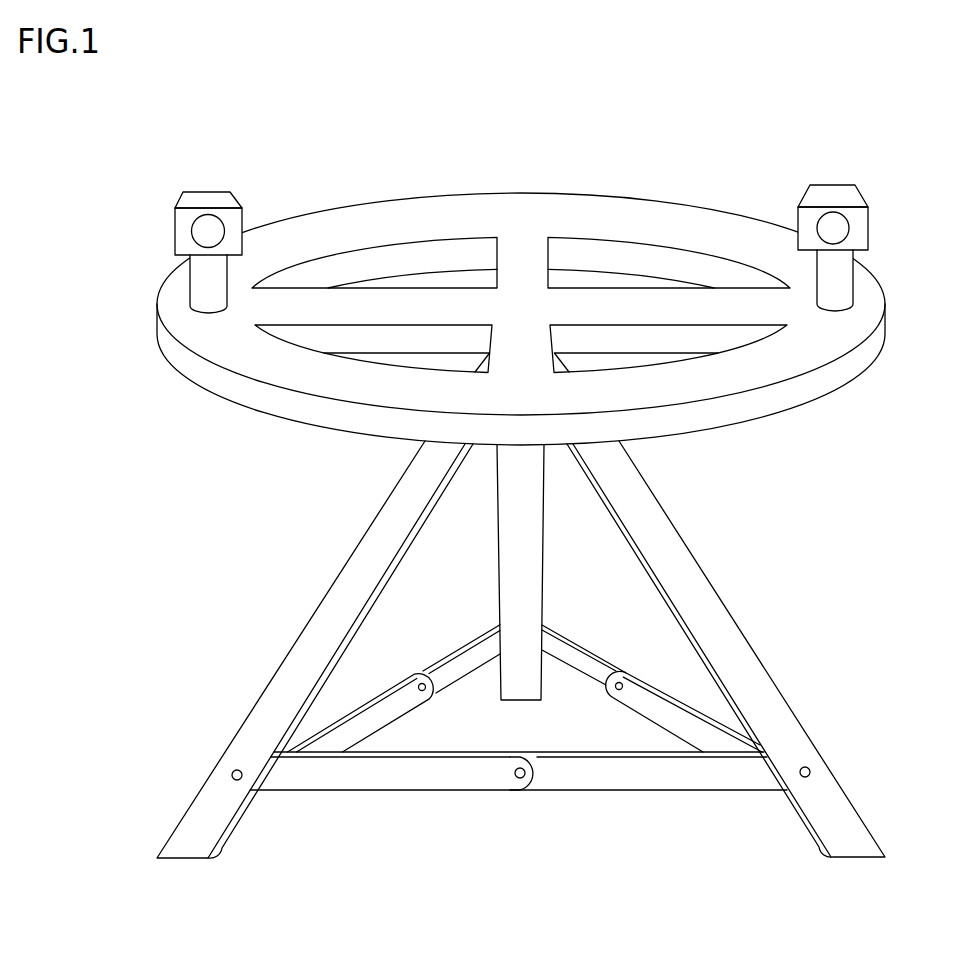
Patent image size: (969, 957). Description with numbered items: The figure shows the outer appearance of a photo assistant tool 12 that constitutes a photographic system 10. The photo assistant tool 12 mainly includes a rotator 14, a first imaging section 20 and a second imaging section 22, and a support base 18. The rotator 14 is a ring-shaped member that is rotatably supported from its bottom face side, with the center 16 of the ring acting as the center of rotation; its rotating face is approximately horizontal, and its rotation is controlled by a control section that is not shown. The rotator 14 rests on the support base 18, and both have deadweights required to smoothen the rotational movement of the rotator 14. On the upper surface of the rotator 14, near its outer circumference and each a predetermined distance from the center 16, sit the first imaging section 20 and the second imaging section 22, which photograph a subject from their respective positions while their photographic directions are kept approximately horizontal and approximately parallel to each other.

The photographic system 10 is at (126, 548).
The photo assistant tool 12 is at (521, 649).
The rotator 14 is at (685, 222).
The center 16 is at (521, 303).
The support base 18 is at (731, 645).
The first imaging section 20 is at (208, 202).
The second imaging section 22 is at (833, 197).